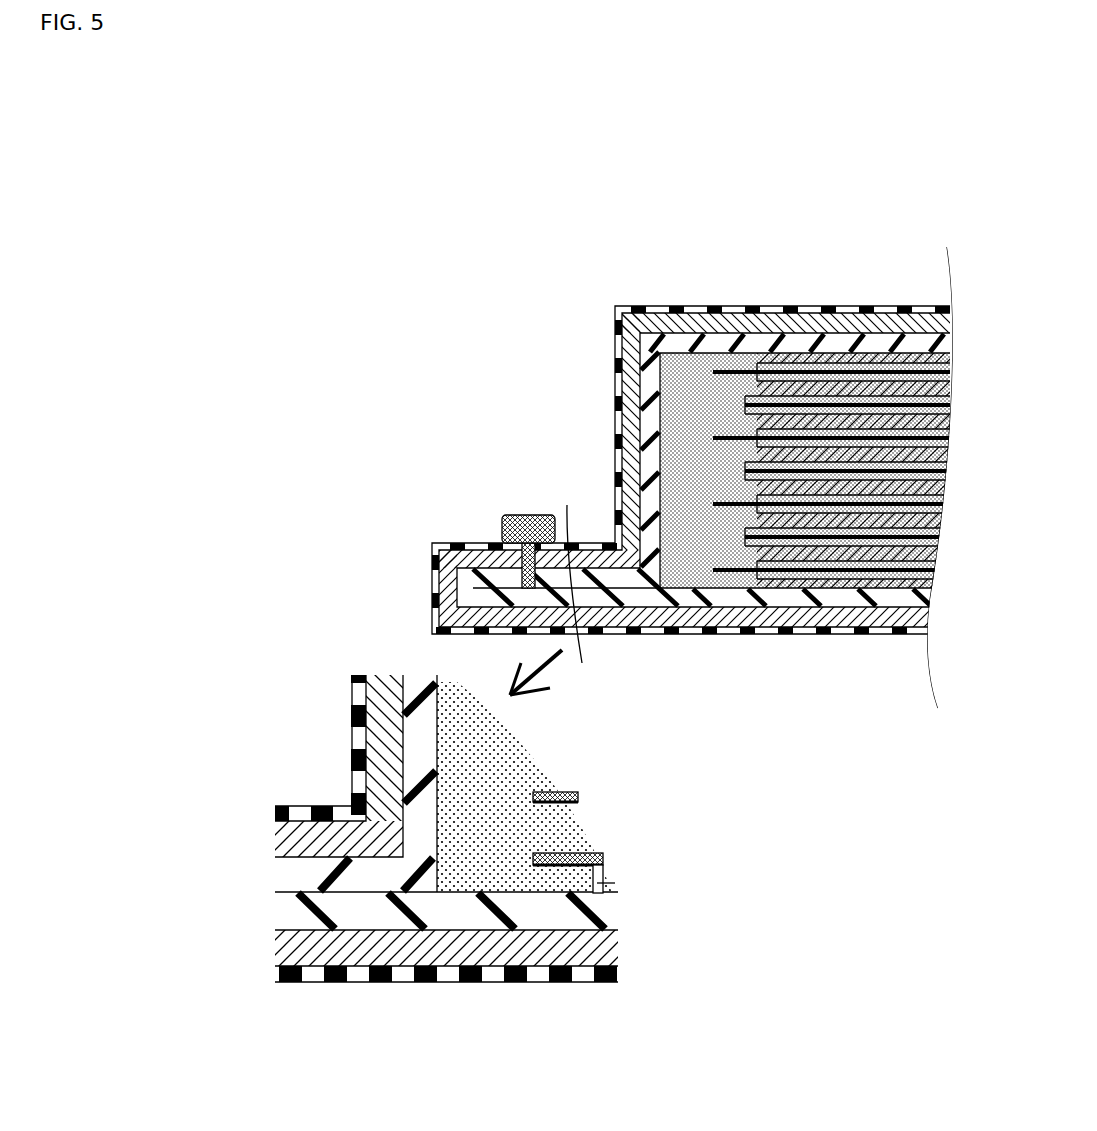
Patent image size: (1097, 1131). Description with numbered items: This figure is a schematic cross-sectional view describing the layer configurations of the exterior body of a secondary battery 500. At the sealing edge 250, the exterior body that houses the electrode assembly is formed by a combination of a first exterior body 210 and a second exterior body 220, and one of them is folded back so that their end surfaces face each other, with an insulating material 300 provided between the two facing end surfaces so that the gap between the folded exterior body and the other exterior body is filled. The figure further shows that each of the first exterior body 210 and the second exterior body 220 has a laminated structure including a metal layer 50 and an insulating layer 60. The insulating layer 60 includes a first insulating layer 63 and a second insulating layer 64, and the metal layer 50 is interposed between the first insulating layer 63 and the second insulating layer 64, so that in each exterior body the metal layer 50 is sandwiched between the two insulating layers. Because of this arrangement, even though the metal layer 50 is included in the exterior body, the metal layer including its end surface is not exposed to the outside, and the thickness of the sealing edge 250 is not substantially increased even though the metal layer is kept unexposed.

The secondary battery 500 is at (538, 203).
The sealing edge 250 is at (397, 400).
The second exterior body 220 is at (593, 537).
The first exterior body 210 is at (607, 648).
The insulating material 300 is at (530, 515).
The insulating layer 60 is at (265, 753).
The first insulating layer 63 is at (472, 590).
The second insulating layer 64 is at (437, 546).
The metal layer 50 is at (448, 573).